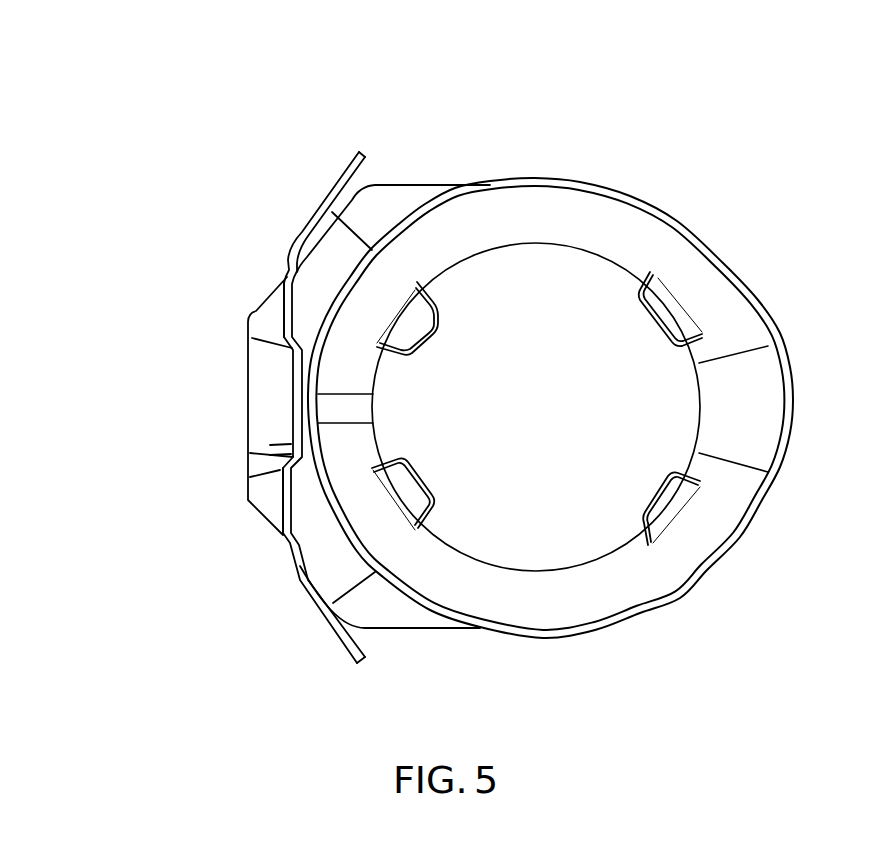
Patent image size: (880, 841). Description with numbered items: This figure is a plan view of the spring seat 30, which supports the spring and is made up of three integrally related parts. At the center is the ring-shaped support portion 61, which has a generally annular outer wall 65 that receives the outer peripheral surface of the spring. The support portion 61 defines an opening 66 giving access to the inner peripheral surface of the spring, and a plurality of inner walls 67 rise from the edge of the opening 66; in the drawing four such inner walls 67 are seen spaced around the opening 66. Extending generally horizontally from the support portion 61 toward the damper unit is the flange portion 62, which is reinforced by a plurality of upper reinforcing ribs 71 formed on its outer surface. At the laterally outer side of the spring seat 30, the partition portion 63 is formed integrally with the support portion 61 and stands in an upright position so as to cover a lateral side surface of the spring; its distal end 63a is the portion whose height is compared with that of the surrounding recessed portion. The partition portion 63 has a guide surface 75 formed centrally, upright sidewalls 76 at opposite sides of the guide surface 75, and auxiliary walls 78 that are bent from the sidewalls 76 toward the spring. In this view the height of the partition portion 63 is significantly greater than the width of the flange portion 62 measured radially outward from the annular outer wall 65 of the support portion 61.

The spring seat 30 is at (150, 75).
The support portion 61 is at (558, 215).
The flange portion 62 is at (430, 197).
The partition portion 63 is at (283, 438).
The distal end 63a is at (292, 453).
The annular outer wall 65 is at (681, 225).
The opening 66 is at (609, 267).
The inner walls 67 is at (415, 330).
The upper reinforcing ribs 71 is at (357, 222).
The guide surface 75 is at (290, 407).
The upright sidewalls 76 is at (281, 313).
The auxiliary walls 78 is at (318, 205).